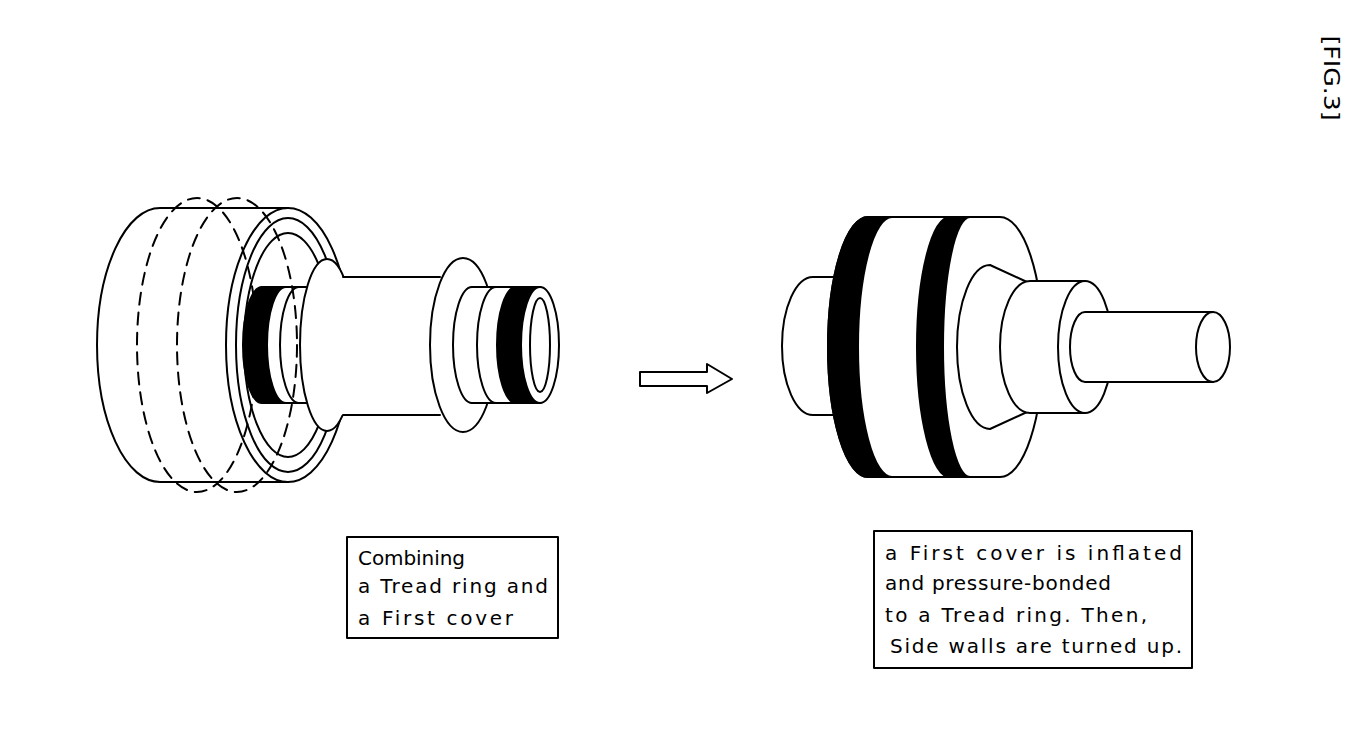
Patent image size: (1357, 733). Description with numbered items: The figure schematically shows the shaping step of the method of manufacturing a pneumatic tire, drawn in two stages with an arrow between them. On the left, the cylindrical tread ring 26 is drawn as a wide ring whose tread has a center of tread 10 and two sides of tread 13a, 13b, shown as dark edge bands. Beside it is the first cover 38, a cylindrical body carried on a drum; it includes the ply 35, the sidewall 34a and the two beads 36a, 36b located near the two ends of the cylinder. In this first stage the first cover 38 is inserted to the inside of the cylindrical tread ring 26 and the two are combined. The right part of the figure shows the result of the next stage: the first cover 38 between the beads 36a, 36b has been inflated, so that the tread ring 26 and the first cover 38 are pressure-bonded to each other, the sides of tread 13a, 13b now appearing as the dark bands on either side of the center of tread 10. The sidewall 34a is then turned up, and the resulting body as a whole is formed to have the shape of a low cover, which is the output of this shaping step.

The center of tread 10 is at (154, 208).
The tread ring 26 is at (274, 187).
The side of tread 13a is at (509, 334).
The side of tread 13b is at (247, 384).
The sidewall 34a is at (487, 388).
The ply 35 is at (413, 290).
The bead 36a is at (467, 268).
The bead 36b is at (333, 268).
The first cover 38 is at (377, 262).